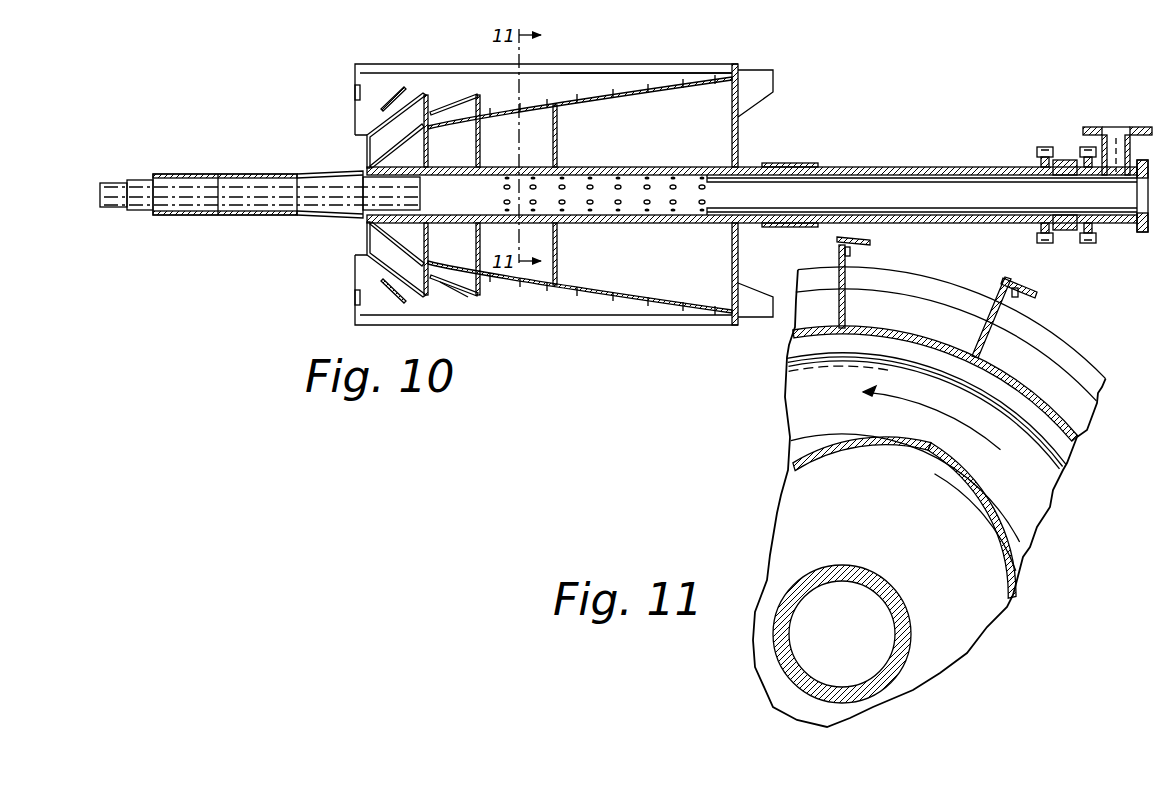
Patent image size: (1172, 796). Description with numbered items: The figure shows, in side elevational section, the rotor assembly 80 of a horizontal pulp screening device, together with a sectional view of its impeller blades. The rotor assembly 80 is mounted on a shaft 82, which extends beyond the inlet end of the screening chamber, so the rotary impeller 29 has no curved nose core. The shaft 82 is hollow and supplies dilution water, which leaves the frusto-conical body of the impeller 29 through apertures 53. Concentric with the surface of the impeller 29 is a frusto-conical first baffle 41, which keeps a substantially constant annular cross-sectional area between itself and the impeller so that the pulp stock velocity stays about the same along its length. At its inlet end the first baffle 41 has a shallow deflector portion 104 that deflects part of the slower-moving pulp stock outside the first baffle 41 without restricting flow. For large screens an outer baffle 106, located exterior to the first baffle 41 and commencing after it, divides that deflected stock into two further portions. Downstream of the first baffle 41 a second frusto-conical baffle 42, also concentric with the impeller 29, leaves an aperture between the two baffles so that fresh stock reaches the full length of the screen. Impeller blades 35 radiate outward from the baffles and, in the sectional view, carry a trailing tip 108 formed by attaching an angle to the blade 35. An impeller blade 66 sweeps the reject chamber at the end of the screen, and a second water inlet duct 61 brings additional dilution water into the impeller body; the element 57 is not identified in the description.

In FIG. 10, the rotor assembly 80 is at (725, 55).
In FIG. 10, the shaft 82 is at (277, 178).
In FIG. 11, the shaft 82 is at (887, 587).
In FIG. 10, the apertures 53 is at (493, 109).
In FIG. 11, the apertures 53 is at (858, 463).
In FIG. 10, the rotary impeller 29 is at (452, 268).
In FIG. 11, the rotary impeller 29 is at (990, 533).
In FIG. 10, the outer baffle 106 is at (383, 110).
In FIG. 10, the shallow deflector portion 104 is at (358, 247).
In FIG. 10, the first baffle 41 is at (380, 273).
In FIG. 10, the second baffle 42 is at (468, 297).
In FIG. 10, the trailing tip 108 is at (648, 71).
In FIG. 11, the trailing tip 108 is at (1033, 293).
In FIG. 10, the impeller blade 66 is at (762, 302).
In FIG. 10, the second water inlet duct 61 is at (1117, 127).
In FIG. 10, the end flange 57 is at (1152, 195).
In FIG. 11, the impeller blades 35 is at (997, 313).